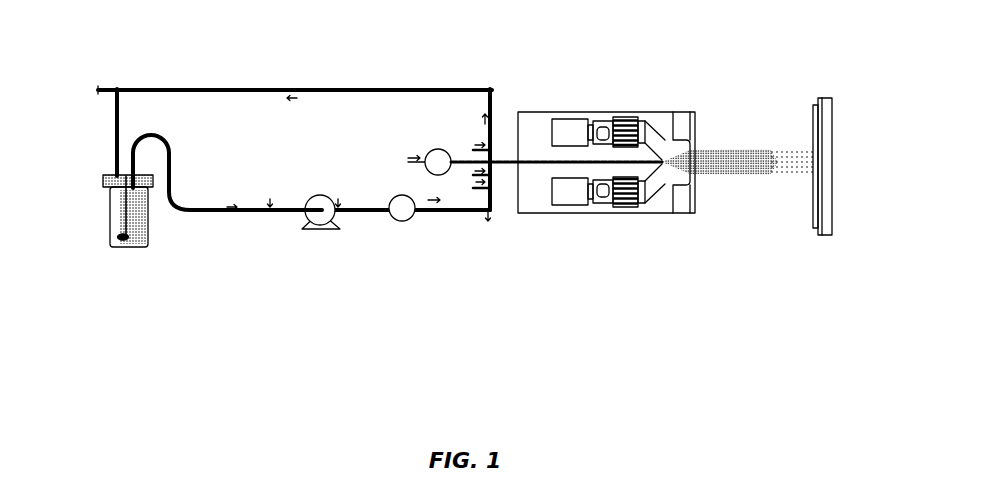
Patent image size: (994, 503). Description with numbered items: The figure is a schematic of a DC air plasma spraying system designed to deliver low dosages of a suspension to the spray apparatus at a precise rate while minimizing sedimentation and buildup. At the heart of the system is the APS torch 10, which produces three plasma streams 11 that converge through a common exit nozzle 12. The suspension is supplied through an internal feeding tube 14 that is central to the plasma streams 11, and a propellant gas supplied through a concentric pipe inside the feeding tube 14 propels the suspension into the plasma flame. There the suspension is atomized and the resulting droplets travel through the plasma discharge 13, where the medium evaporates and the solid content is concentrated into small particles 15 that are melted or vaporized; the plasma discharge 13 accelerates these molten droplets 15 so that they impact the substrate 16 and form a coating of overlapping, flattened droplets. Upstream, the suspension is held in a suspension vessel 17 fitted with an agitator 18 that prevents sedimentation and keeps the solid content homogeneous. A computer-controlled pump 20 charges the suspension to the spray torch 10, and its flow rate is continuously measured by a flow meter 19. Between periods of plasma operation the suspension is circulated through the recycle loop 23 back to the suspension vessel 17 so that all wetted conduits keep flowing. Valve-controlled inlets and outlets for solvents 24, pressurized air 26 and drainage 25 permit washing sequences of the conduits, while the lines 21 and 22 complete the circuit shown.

The APS torch 10 is at (535, 145).
The plasma streams 11 is at (643, 114).
The common exit nozzle 12 is at (688, 143).
The plasma discharge 13 is at (686, 160).
The internal feeding tube 14 is at (623, 157).
The particles 15 is at (790, 183).
The substrate 16 is at (818, 145).
The suspension vessel 17 is at (112, 235).
The agitator 18 is at (128, 242).
The flow meter 19 is at (332, 230).
The pump 20 is at (411, 217).
The feed line 21 is at (408, 162).
The motor 22 is at (433, 150).
The recycle loop 23 is at (288, 88).
The solvents inlet 24 is at (271, 197).
The drainage outlet 25 is at (104, 88).
The pressurized air inlet 26 is at (472, 148).